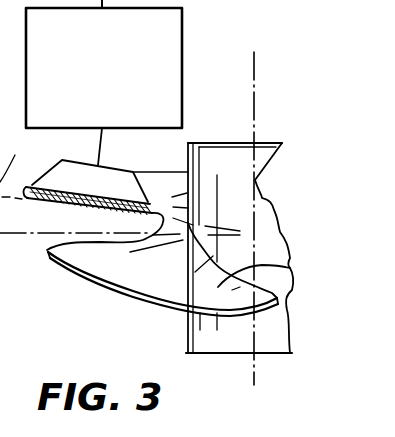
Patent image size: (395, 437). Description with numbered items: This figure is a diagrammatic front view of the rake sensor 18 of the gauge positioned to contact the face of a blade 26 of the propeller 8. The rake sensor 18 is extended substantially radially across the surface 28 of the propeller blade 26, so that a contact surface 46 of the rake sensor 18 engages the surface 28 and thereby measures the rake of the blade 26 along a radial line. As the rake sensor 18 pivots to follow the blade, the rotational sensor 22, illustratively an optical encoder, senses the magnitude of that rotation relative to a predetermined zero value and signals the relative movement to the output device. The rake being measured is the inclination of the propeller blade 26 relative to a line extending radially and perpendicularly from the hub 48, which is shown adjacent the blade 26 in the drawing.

The propeller 8 is at (279, 197).
The rake sensor 18 is at (65, 182).
The rotational sensor 22 is at (122, 81).
The propeller blade 26 is at (290, 268).
The surface 28 is at (183, 287).
The contact surface 46 is at (100, 197).
The hub 48 is at (247, 168).